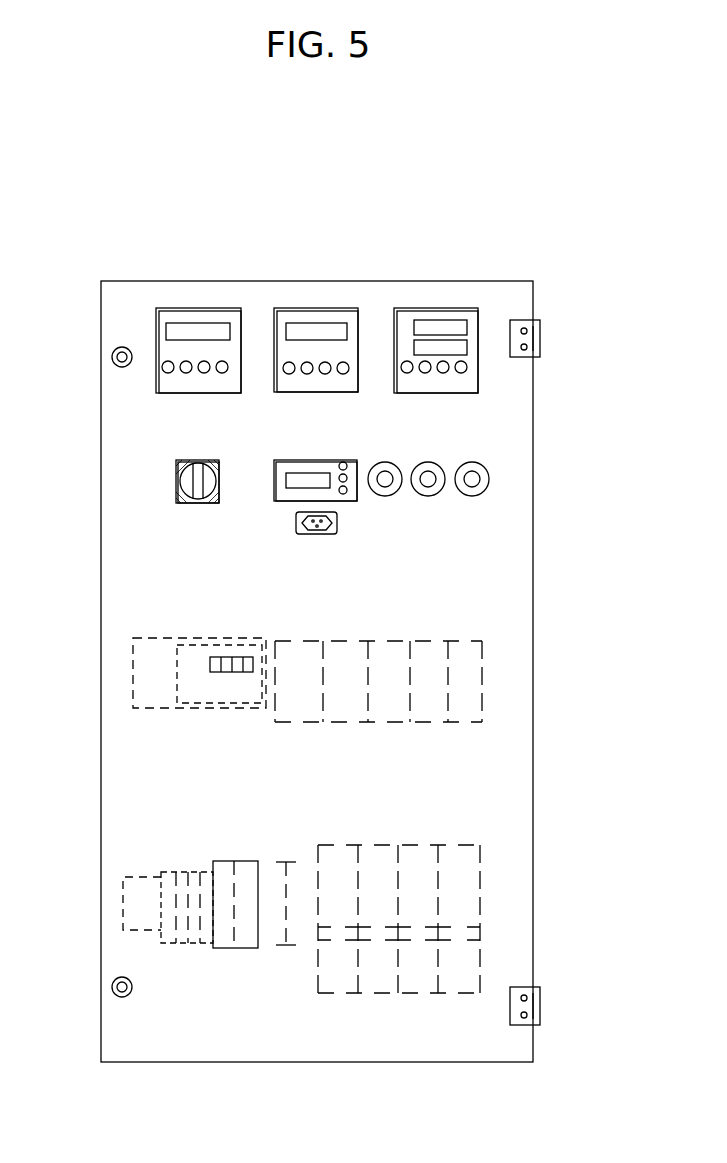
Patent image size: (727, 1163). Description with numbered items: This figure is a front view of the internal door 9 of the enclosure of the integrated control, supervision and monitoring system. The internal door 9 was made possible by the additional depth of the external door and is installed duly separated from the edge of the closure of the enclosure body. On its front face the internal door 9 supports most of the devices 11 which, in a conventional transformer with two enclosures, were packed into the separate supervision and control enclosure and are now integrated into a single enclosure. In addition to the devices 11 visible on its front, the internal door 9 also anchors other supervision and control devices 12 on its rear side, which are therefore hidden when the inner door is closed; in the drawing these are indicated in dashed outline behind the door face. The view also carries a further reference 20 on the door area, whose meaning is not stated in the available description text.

The internal door 9 is at (328, 1022).
The devices 11 is at (426, 303).
The supervision and control devices 12 is at (142, 866).
The mounting plate 20 is at (151, 768).